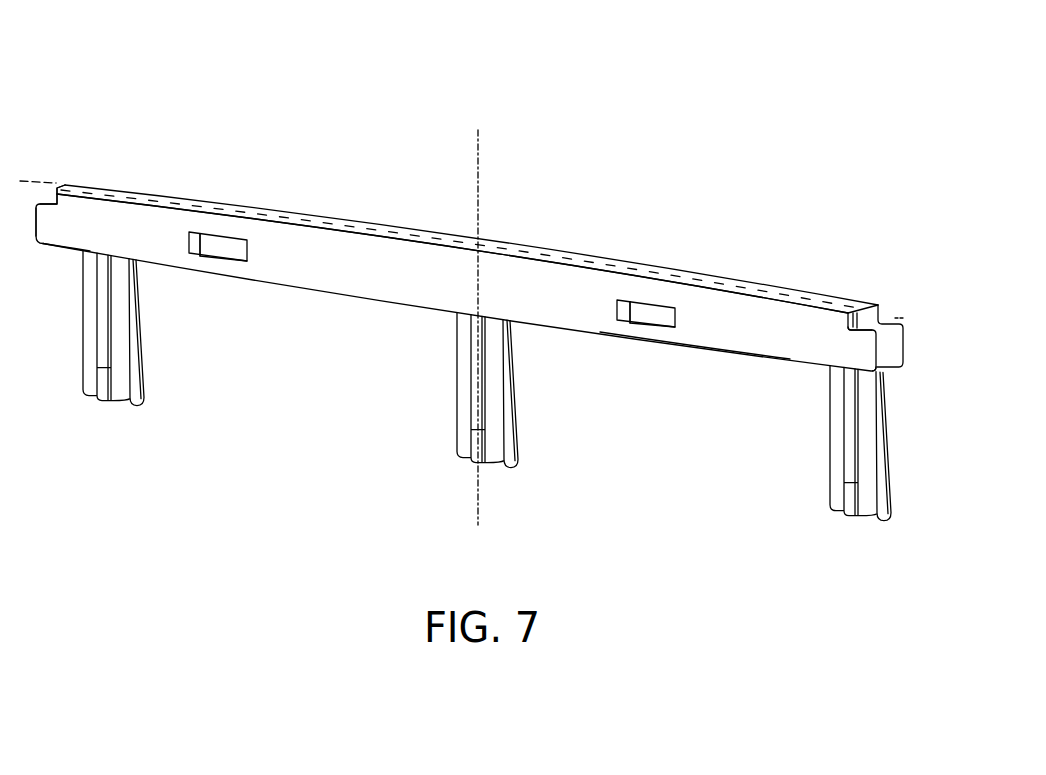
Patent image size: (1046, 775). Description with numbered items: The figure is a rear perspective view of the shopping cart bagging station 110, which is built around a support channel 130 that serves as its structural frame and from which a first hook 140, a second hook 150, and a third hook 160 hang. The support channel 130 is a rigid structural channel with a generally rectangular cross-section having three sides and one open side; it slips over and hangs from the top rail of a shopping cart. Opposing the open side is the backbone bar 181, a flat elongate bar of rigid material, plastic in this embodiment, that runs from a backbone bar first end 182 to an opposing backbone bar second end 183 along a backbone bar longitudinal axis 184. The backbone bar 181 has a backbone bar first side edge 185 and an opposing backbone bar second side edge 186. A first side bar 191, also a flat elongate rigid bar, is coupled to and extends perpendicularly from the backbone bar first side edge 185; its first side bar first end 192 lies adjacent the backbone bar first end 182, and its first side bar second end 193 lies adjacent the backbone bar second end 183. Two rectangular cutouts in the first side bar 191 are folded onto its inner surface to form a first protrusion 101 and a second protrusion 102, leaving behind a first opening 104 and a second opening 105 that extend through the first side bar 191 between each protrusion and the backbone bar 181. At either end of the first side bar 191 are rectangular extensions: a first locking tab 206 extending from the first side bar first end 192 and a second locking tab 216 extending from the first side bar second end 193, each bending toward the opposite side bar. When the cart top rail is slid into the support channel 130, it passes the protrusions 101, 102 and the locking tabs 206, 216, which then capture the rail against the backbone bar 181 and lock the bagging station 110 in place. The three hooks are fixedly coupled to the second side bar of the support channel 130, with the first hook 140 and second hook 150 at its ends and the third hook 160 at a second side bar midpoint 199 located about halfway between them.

The shopping cart bagging station 110 is at (372, 88).
The first protrusion 101 is at (650, 325).
The second protrusion 102 is at (222, 258).
The first opening 104 is at (636, 316).
The second opening 105 is at (228, 243).
The support channel 130 is at (668, 226).
The first hook 140 is at (852, 518).
The second hook 150 is at (99, 404).
The third hook 160 is at (484, 463).
The backbone bar 181 is at (526, 247).
The backbone bar first end 182 is at (835, 308).
The backbone bar second end 183 is at (86, 186).
The backbone bar longitudinal axis 184 is at (896, 320).
The backbone bar first side edge 185 is at (332, 229).
The backbone bar second side edge 186 is at (713, 277).
The first side bar 191 is at (718, 339).
The first side bar first end 192 is at (850, 346).
The first side bar second end 193 is at (60, 232).
The second side bar midpoint 199 is at (474, 180).
The first locking tab 206 is at (860, 354).
The second locking tab 216 is at (47, 224).